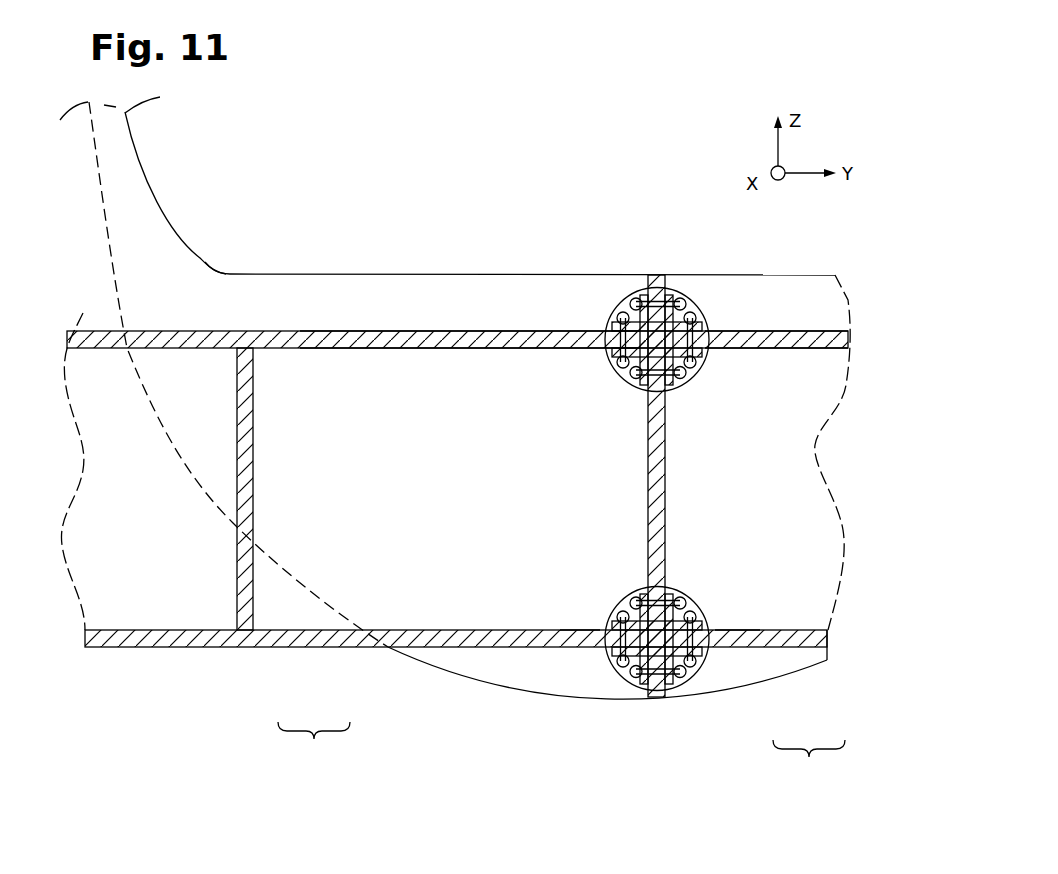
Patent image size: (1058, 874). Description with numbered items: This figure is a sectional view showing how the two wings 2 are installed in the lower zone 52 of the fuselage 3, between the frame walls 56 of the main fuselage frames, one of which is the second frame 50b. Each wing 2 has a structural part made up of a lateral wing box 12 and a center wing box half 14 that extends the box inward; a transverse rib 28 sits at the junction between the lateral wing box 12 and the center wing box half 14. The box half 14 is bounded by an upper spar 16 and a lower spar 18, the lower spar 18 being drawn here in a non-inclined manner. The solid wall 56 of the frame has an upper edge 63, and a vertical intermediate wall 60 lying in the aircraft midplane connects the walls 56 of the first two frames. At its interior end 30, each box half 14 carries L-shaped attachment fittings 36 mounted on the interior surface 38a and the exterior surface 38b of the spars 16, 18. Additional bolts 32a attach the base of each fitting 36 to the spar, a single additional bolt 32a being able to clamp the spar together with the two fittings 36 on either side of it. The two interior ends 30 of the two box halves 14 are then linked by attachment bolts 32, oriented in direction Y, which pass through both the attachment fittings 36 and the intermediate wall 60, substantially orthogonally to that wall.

The wing 2 is at (561, 752).
The fuselage 3 is at (162, 183).
The lateral wing box 12 is at (154, 602).
The center wing box half 14 is at (357, 670).
The upper spar 16 is at (305, 330).
The lower spar 18 is at (300, 640).
The transverse rib 28 is at (246, 450).
The interior end 30 is at (615, 645).
The attachment bolt 32 is at (628, 292).
The additional bolt 32a is at (595, 300).
The attachment fitting 36 is at (622, 300).
The interior surface 38a is at (412, 349).
The exterior surface 38b is at (388, 330).
The second fuselage frame 50b is at (214, 264).
The lower zone 52 is at (212, 392).
The solid wall 56 is at (360, 305).
The intermediate wall 60 is at (670, 430).
The upper edge 63 is at (490, 273).